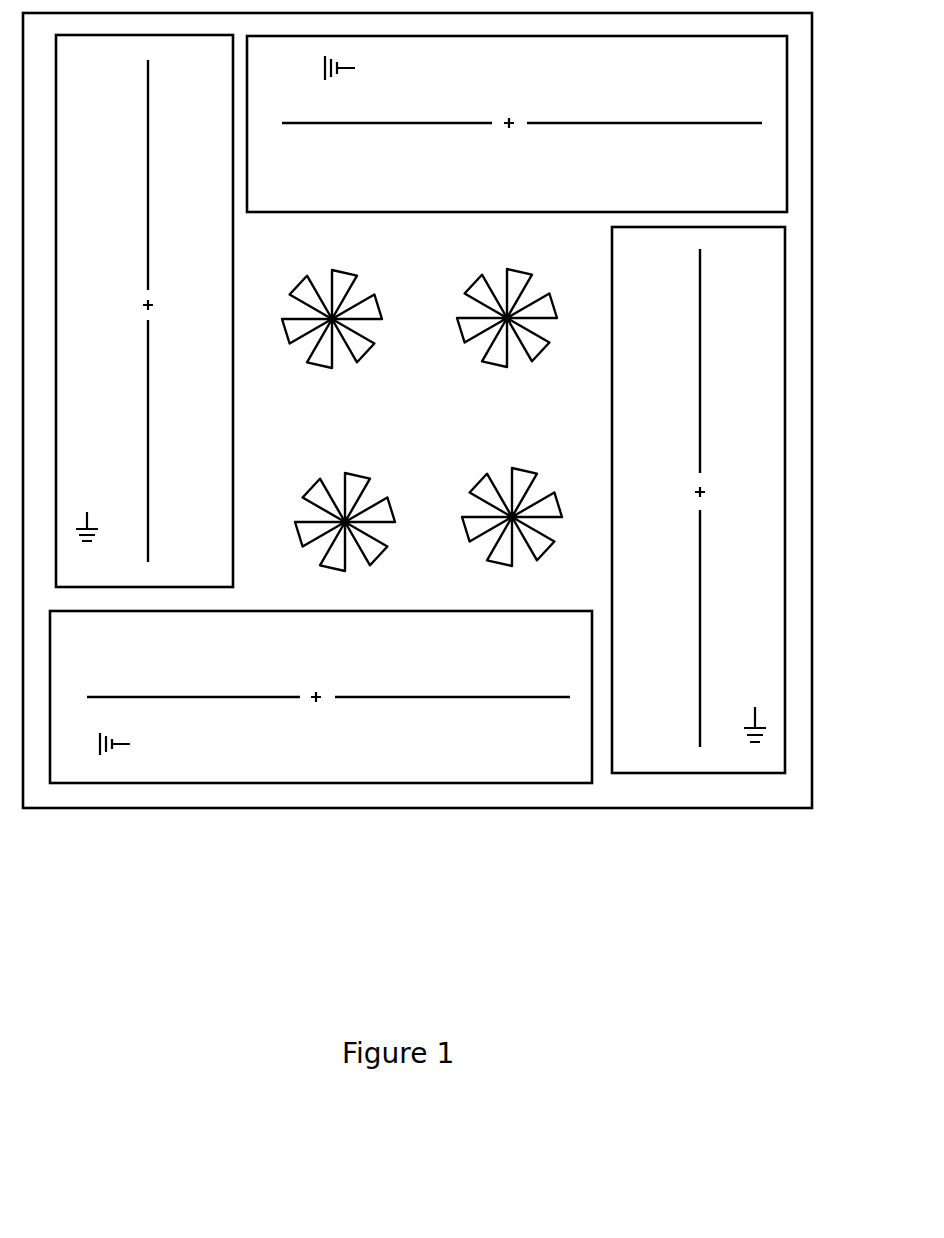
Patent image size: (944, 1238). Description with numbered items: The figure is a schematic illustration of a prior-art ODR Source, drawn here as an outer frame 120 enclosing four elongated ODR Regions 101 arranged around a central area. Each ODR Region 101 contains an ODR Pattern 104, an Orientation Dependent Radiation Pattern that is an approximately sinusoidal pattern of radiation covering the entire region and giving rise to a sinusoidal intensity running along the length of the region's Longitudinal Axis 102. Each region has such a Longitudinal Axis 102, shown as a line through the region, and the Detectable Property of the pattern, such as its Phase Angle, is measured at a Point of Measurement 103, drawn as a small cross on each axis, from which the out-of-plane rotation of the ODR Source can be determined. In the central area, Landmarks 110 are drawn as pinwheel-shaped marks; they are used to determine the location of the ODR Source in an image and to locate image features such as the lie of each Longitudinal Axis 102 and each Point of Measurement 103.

The ODR Region 101 is at (112, 113).
The Longitudinal Axis 102 is at (148, 205).
The Point of Measurement 103 is at (152, 308).
The ODR Pattern 104 is at (420, 407).
The Landmark 110 is at (478, 478).
The substrate 120 is at (798, 360).